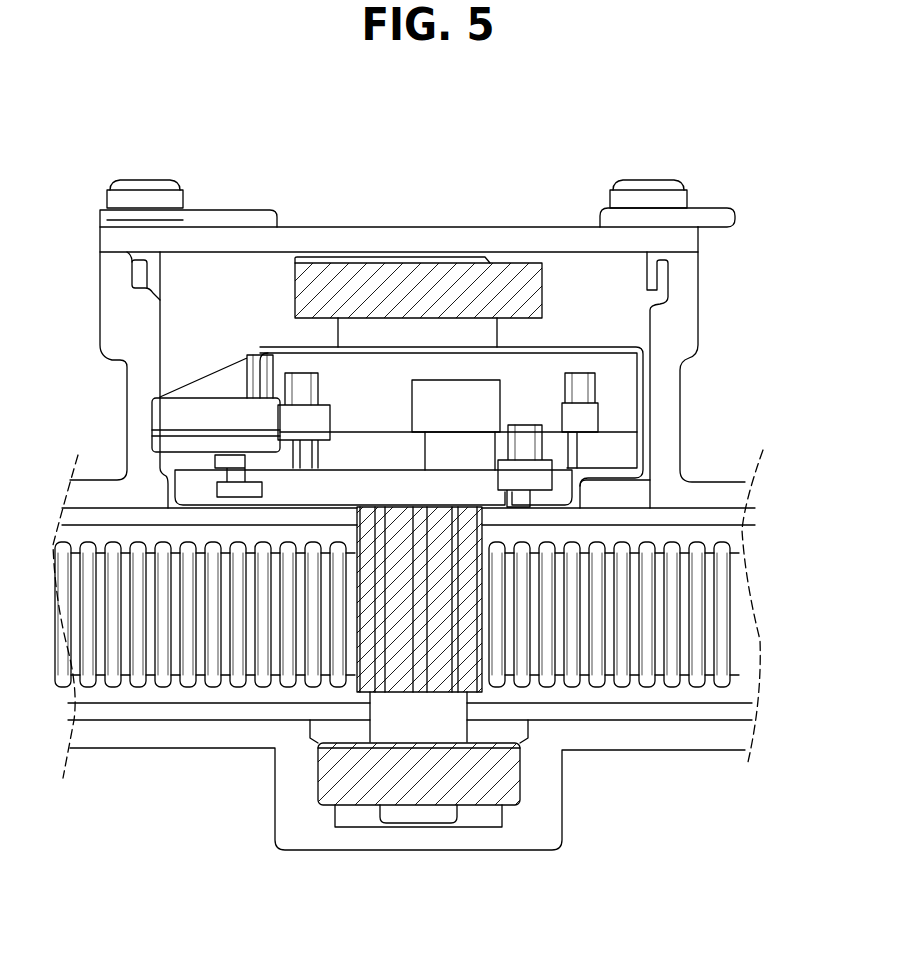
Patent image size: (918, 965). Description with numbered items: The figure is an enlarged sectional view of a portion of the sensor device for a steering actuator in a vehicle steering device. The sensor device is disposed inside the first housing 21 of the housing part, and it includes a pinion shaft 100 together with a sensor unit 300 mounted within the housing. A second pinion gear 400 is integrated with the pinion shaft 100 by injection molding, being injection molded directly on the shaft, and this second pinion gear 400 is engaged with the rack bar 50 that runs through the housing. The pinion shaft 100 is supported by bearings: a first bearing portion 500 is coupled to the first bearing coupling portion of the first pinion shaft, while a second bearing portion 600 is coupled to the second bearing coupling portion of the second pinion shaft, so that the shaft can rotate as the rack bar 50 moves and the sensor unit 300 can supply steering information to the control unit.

The first bearing portion 500 is at (430, 283).
The sensor unit 300 is at (293, 420).
The first housing 21 is at (667, 392).
The rack bar 50 is at (600, 638).
The second pinion gear 400 is at (462, 613).
The second bearing portion 600 is at (338, 772).
The pinion shaft 100 is at (423, 813).